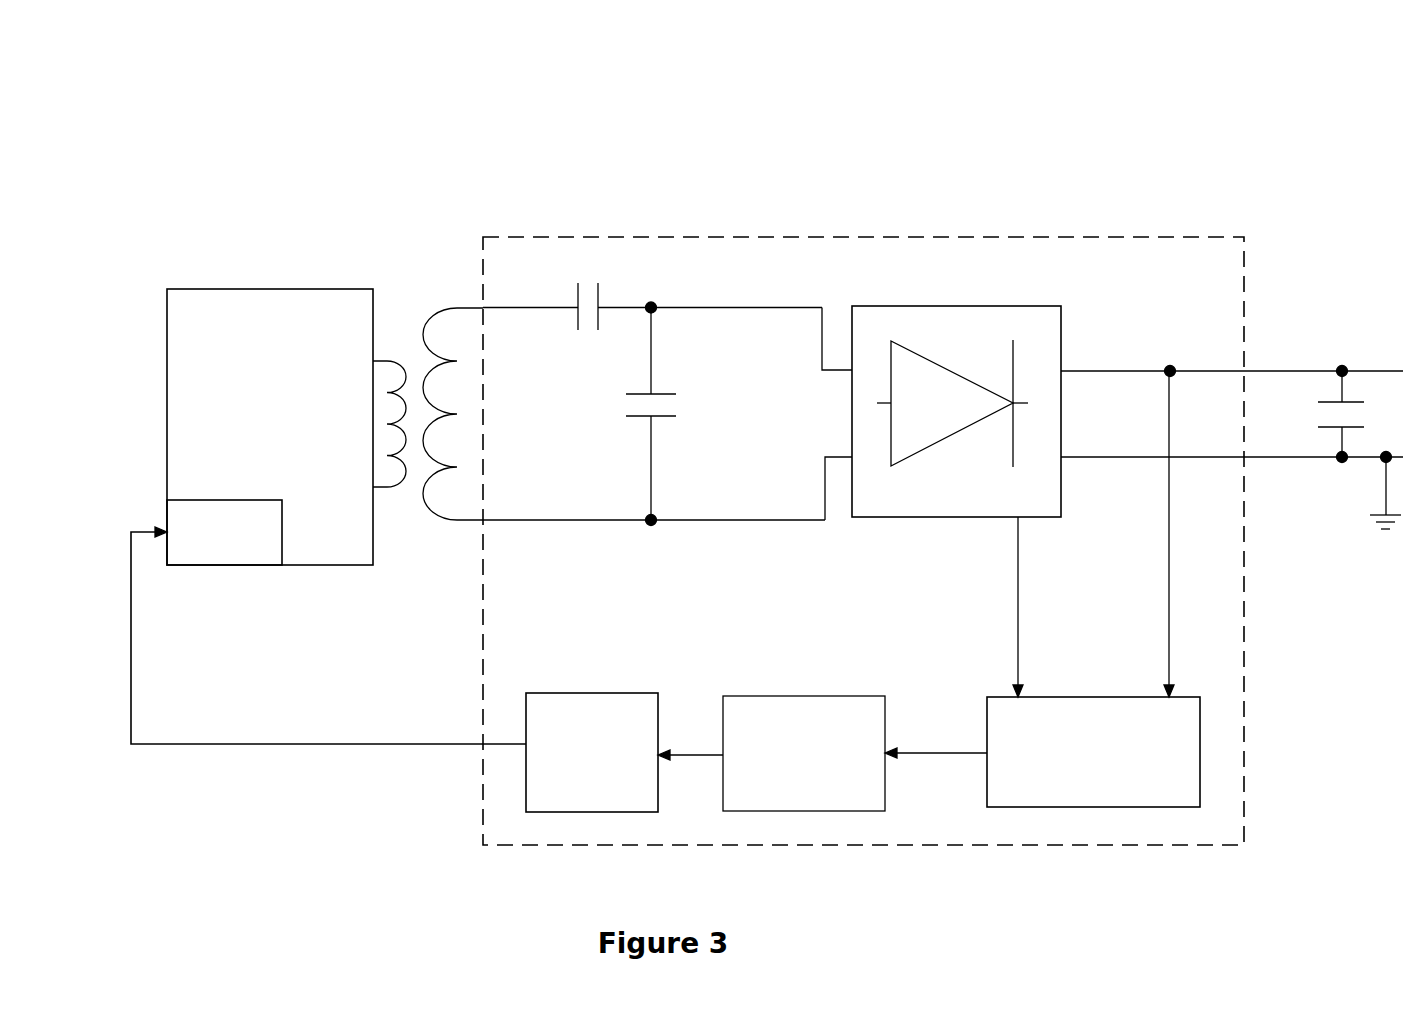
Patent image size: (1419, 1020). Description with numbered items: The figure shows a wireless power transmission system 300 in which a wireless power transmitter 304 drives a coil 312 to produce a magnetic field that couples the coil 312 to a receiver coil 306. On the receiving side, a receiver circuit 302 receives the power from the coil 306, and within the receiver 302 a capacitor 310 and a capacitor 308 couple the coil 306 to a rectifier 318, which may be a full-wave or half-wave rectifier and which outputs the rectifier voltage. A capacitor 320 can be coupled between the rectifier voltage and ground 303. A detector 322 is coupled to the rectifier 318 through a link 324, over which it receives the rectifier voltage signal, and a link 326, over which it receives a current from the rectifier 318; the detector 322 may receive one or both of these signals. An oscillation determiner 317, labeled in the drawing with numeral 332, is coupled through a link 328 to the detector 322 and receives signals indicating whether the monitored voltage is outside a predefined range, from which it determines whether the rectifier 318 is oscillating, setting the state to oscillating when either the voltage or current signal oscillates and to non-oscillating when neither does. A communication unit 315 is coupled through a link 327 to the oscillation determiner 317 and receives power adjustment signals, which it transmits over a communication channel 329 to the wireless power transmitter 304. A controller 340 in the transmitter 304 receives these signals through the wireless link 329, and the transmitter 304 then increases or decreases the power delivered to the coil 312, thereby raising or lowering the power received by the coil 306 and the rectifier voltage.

The wireless power transmission system 300 is at (292, 142).
The receiver circuit 302 is at (943, 513).
The ground 303 is at (1378, 510).
The wireless power transmitter 304 is at (293, 308).
The coil 306 is at (431, 335).
The capacitor 308 is at (670, 405).
The capacitor 310 is at (588, 283).
The coil 312 is at (387, 373).
The communication unit 315 is at (592, 752).
The oscillation determiner 317 is at (804, 753).
The rectifier 318 is at (912, 360).
The capacitor 320 is at (1314, 412).
The detector 322 is at (1093, 752).
The link 324 is at (1172, 571).
The link 326 is at (1013, 568).
The link 327 is at (693, 757).
The link 328 is at (930, 757).
The communication channel 329 is at (215, 753).
The oscillation determiner block 332 is at (804, 735).
The controller 340 is at (224, 532).